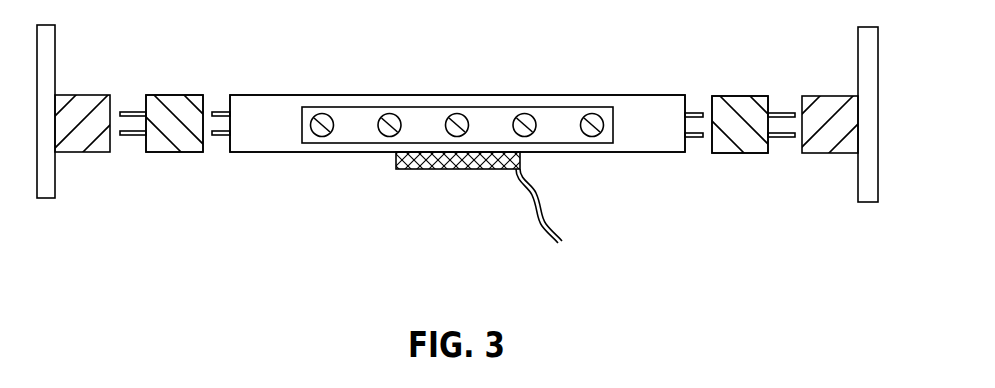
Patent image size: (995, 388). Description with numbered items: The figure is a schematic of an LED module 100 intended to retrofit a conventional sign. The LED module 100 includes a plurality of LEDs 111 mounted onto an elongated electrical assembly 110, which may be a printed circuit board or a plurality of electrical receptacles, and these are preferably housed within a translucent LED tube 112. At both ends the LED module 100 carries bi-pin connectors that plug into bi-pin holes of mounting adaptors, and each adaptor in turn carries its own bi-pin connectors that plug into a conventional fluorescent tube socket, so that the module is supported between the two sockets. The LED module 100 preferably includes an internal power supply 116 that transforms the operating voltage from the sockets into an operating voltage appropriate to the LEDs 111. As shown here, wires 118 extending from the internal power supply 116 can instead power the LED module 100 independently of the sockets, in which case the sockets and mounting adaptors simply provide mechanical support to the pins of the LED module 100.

The LED module 100 is at (441, 40).
The elongated electrical assembly 110 is at (467, 107).
The LEDs 111 is at (538, 118).
The translucent LED tube 112 is at (348, 96).
The internal power supply 116 is at (408, 173).
The wires 118 is at (548, 237).